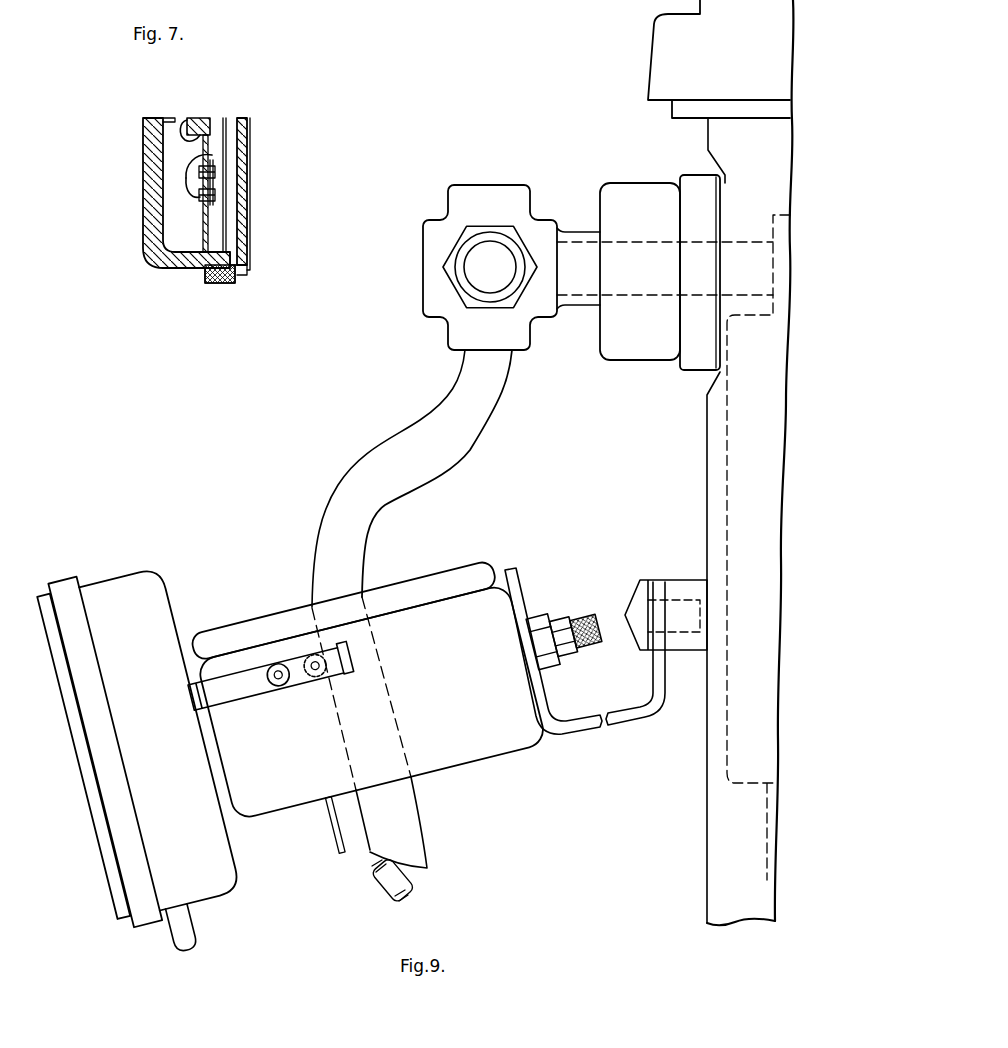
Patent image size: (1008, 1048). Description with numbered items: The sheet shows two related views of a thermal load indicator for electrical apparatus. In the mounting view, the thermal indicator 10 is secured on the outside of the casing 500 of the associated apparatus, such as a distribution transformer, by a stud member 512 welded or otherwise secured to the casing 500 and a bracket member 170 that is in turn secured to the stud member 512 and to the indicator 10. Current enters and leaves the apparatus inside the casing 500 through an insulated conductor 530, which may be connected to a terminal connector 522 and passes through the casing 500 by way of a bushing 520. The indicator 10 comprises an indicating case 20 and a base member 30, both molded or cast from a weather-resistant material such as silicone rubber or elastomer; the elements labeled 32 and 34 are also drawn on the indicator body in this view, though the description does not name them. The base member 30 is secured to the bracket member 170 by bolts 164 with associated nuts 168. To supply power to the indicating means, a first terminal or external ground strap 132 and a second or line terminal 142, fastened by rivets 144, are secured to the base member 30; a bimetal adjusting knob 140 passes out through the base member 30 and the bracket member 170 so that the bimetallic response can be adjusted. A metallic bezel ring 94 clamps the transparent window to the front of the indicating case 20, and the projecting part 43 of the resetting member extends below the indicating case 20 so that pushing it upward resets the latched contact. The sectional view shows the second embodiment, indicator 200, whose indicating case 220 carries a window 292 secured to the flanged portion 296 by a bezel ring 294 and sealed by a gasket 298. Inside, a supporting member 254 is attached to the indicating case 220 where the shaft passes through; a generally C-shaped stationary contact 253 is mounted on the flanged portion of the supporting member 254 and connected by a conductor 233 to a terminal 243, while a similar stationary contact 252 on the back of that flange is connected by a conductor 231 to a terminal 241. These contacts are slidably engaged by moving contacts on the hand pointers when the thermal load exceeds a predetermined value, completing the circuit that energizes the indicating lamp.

In FIG. 9, the thermal load indicator 10 is at (480, 846).
In FIG. 9, the indicating case 20 is at (107, 580).
In FIG. 9, the base member 30 is at (552, 770).
In FIG. 9, the cover 32 is at (427, 580).
In FIG. 9, the housing 34 is at (446, 755).
In FIG. 9, the projecting part 43 is at (196, 948).
In FIG. 9, the bezel ring 94 is at (152, 925).
In FIG. 9, the external ground strap 132 is at (336, 849).
In FIG. 9, the bimetal adjusting knob 140 is at (598, 645).
In FIG. 9, the line terminal 142 is at (240, 688).
In FIG. 9, the rivets 144 is at (312, 674).
In FIG. 9, the bolts 164 is at (578, 628).
In FIG. 9, the nuts 168 is at (541, 628).
In FIG. 9, the bracket member 170 is at (612, 722).
In FIG. 7, the indicator 200 is at (211, 335).
In FIG. 7, the indicating case 220 is at (158, 255).
In FIG. 7, the conductor 231 is at (192, 197).
In FIG. 7, the conductor 233 is at (190, 168).
In FIG. 7, the terminal 241 is at (216, 197).
In FIG. 7, the terminal 243 is at (216, 172).
In FIG. 7, the stationary contact 252 is at (186, 120).
In FIG. 7, the stationary contact 253 is at (225, 135).
In FIG. 7, the supporting member 254 is at (200, 118).
In FIG. 7, the window 292 is at (250, 136).
In FIG. 7, the bezel ring 294 is at (246, 272).
In FIG. 7, the flanged portion 296 is at (205, 270).
In FIG. 7, the gasket 298 is at (230, 283).
In FIG. 9, the casing 500 is at (707, 422).
In FIG. 9, the stud member 512 is at (684, 584).
In FIG. 9, the bushing 520 is at (632, 200).
In FIG. 9, the terminal connector 522 is at (480, 285).
In FIG. 9, the conductor 530 is at (492, 428).